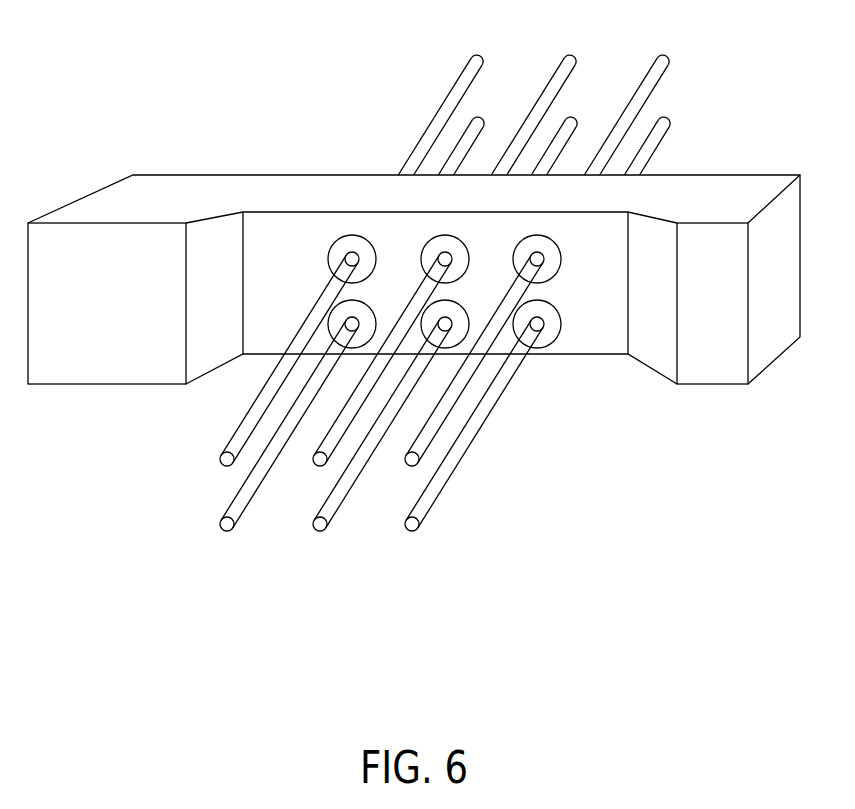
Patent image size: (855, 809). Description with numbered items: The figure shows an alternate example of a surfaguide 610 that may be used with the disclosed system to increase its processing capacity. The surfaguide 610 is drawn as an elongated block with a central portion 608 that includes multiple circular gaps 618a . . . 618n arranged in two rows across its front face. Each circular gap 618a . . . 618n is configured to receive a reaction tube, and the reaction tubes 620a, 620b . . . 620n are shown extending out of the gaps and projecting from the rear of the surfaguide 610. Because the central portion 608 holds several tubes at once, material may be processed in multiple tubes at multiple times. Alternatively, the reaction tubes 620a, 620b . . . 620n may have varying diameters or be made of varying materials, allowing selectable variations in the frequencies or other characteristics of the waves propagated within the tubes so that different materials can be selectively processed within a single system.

The surfaguide 610 is at (142, 149).
The central portion 608 is at (290, 220).
The circular gap 618a is at (351, 256).
The circular gap 618n is at (551, 339).
The reaction tube 620a is at (216, 478).
The reaction tube 620b is at (221, 546).
The reaction tube 620n is at (423, 550).